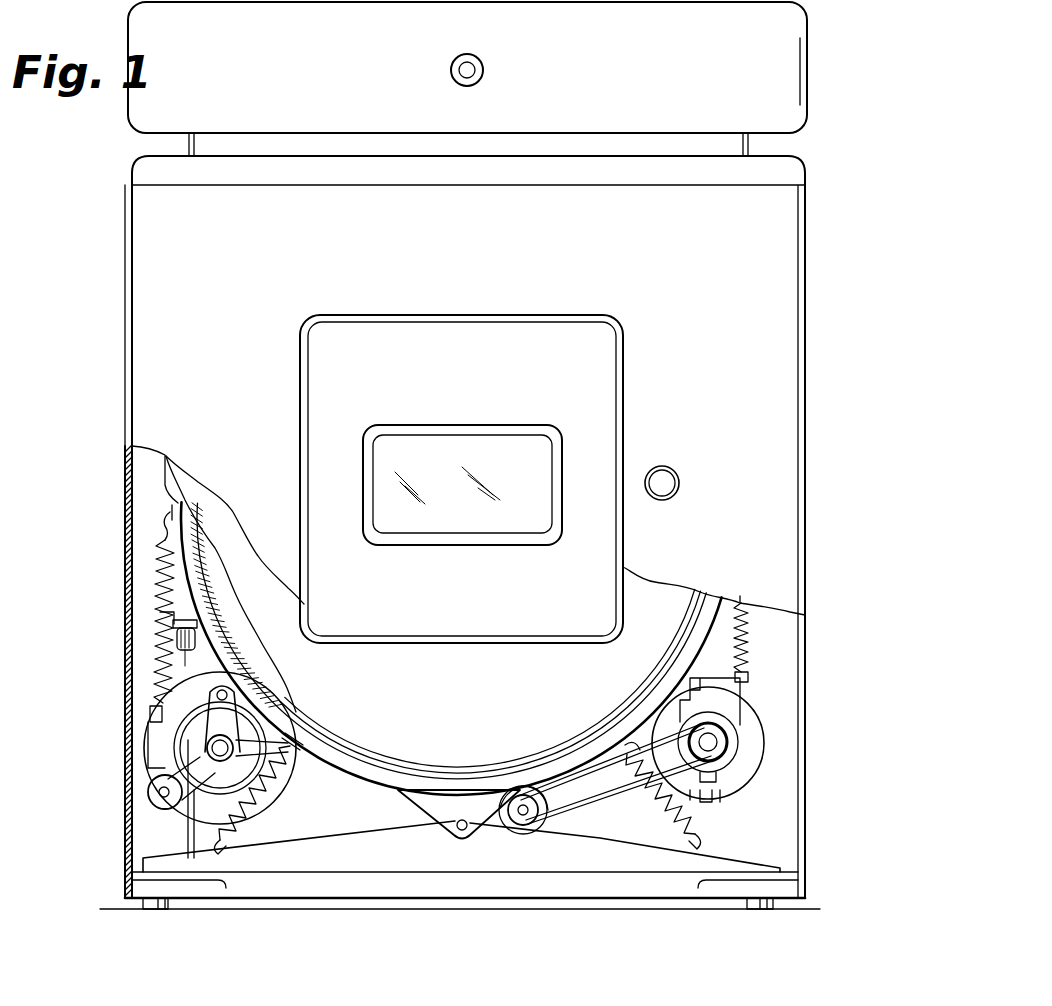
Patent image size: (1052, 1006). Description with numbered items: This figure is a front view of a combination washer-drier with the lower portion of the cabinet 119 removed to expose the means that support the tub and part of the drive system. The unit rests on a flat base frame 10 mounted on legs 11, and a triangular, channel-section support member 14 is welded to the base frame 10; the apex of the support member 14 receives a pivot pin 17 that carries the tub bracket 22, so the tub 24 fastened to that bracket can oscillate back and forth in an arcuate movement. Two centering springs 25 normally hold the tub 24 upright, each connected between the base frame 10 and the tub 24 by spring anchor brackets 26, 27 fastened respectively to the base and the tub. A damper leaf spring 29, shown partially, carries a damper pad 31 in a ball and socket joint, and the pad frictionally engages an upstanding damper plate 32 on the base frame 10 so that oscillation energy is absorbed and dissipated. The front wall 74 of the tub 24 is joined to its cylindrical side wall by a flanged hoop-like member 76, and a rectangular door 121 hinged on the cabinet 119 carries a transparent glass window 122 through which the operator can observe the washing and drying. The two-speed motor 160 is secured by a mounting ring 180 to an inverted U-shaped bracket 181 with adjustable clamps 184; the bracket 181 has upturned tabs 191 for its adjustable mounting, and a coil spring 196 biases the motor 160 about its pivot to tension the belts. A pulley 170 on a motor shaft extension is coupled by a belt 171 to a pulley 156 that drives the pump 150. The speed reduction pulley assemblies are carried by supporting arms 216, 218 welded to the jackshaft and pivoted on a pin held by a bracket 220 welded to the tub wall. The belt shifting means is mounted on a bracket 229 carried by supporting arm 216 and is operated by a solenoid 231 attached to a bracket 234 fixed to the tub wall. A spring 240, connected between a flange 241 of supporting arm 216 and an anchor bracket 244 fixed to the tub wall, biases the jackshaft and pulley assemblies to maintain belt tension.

The base frame 10 is at (340, 899).
The legs 11 is at (133, 906).
The support member 14 is at (356, 843).
The pivot pin 17 is at (468, 828).
The tub bracket 22 is at (430, 798).
The tub 24 is at (705, 607).
The centering springs 25 is at (268, 808).
The spring anchor bracket 26 is at (230, 836).
The spring anchor bracket 27 is at (305, 752).
The damper leaf spring 29 is at (150, 790).
The damper pad 31 is at (152, 806).
The damper plate 32 is at (152, 831).
The front wall 74 is at (464, 721).
The flanged hoop-like members 76 is at (352, 770).
The cabinet 119 is at (128, 340).
The door 121 is at (613, 344).
The glass window 122 is at (530, 474).
The pump 150 is at (555, 823).
The pulley 156 is at (523, 793).
The motor 160 is at (738, 784).
The pulley 170 is at (722, 752).
The belt 171 is at (600, 742).
The mounting ring 180 is at (730, 735).
The U-shaped bracket 181 is at (738, 708).
The adjustable clamps 184 is at (716, 778).
The upturned tabs 191 is at (745, 682).
The coil spring 196 is at (750, 633).
The supporting arm 216 is at (160, 760).
The supporting arm 218 is at (228, 727).
The bracket 220 is at (243, 693).
The bracket 229 is at (150, 665).
The solenoid 231 is at (200, 636).
The bracket 234 is at (155, 620).
The spring 240 is at (150, 579).
The flange 241 is at (176, 730).
The anchor bracket 244 is at (162, 520).